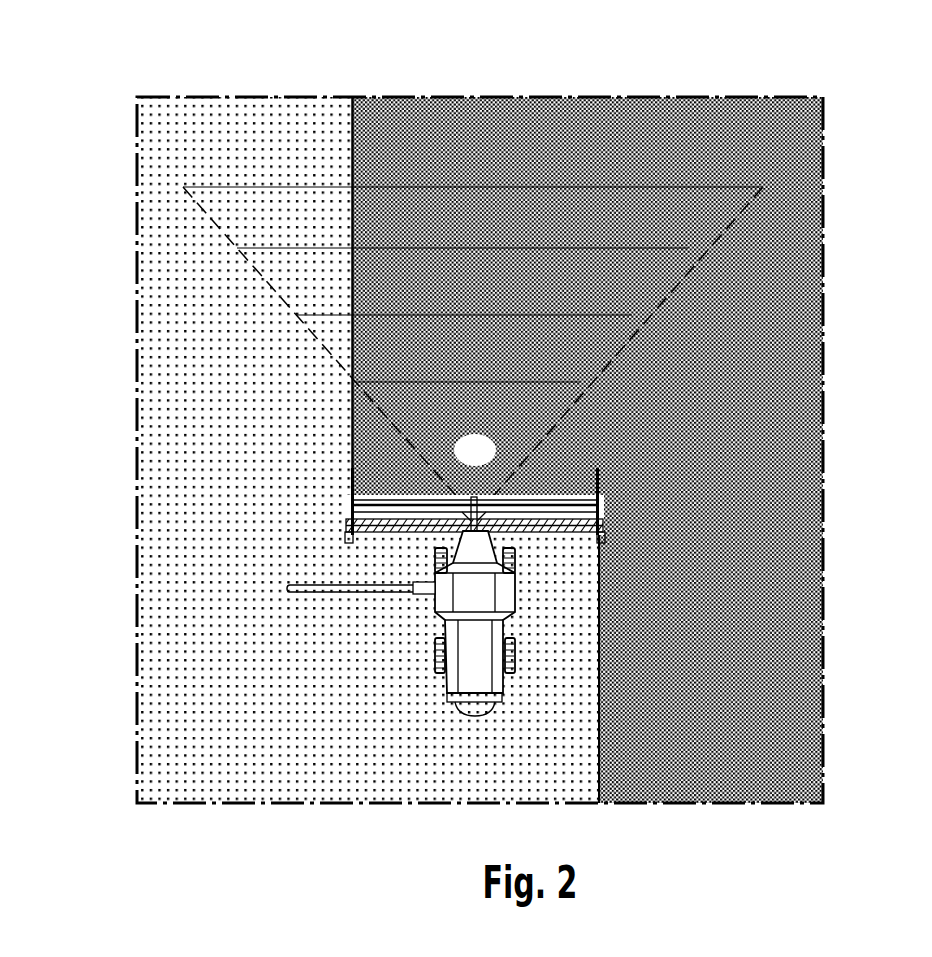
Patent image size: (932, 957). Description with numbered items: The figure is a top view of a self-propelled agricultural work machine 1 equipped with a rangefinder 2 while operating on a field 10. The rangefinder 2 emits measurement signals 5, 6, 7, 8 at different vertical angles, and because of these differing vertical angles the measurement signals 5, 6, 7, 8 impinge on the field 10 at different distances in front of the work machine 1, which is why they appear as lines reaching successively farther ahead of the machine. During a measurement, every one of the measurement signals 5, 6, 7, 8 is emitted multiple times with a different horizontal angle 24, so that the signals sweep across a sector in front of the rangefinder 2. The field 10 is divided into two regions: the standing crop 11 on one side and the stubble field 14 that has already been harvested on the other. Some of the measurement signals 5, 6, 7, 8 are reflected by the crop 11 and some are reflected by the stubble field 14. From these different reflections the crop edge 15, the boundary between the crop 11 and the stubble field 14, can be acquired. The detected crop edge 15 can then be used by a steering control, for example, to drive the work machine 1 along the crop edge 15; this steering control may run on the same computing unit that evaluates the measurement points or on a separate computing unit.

The self-propelled agricultural work machine 1 is at (530, 626).
The rangefinder 2 is at (488, 545).
The measurement signal 5 is at (570, 382).
The measurement signal 6 is at (632, 315).
The measurement signal 7 is at (688, 248).
The measurement signal 8 is at (728, 187).
The field 10 is at (665, 126).
The crop 11 is at (588, 128).
The stubble field 14 is at (227, 122).
The crop edge 15 is at (352, 95).
The horizontal angle 24 is at (527, 467).